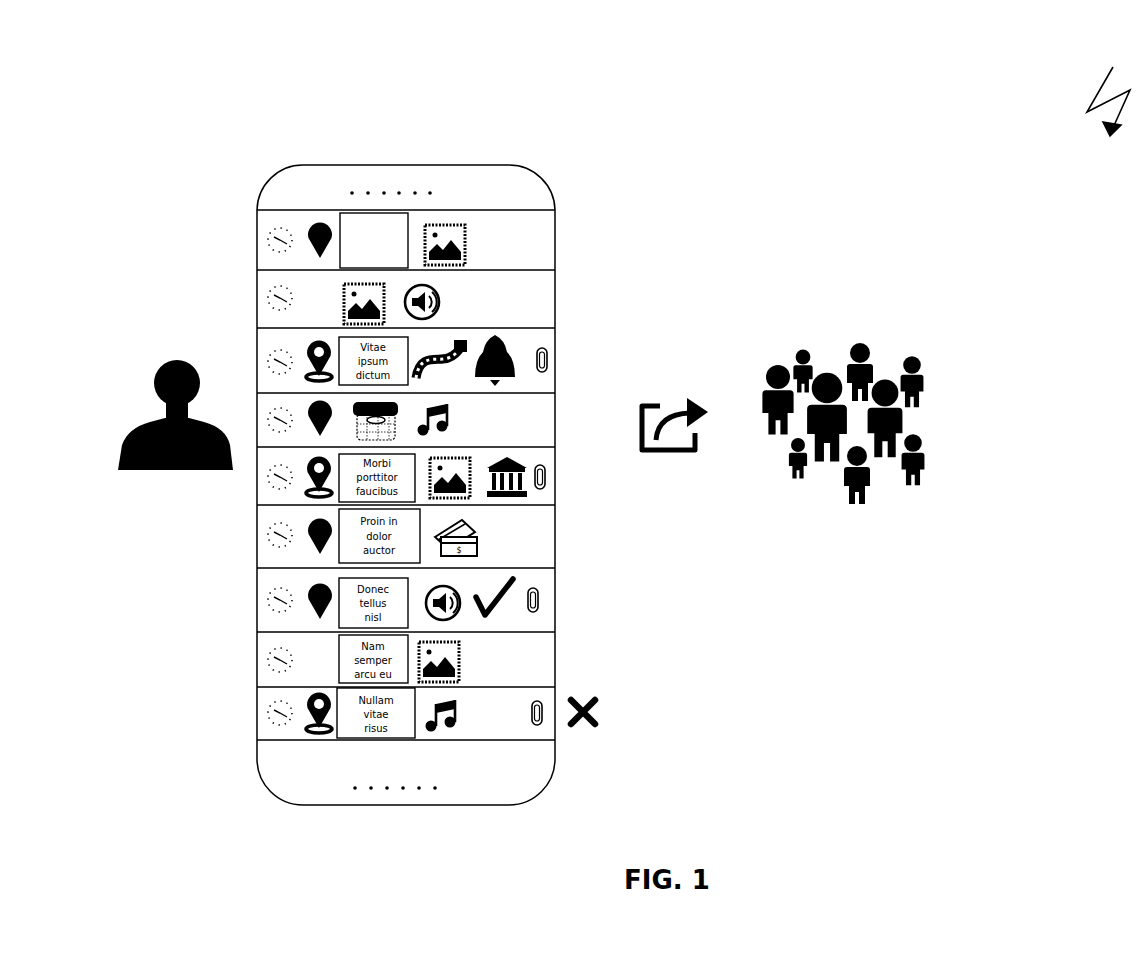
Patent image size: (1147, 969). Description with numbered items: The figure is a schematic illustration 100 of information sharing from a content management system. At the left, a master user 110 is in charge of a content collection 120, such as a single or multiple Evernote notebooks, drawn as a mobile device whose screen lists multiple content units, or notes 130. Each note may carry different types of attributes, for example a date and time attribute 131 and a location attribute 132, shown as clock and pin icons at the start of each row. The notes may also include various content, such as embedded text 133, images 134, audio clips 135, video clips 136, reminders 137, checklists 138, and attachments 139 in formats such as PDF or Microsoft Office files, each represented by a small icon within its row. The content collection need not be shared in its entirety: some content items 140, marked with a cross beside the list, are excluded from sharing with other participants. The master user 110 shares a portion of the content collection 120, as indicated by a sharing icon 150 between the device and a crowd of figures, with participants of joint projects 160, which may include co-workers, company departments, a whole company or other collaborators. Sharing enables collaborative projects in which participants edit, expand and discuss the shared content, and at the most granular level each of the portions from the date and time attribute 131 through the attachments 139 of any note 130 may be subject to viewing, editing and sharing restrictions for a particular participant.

The schematic illustration 100 is at (1108, 89).
The master user 110 is at (163, 358).
The content collection 120 is at (288, 163).
The notes 130 is at (250, 243).
The date and time attribute 131 is at (265, 652).
The location attribute 132 is at (302, 596).
The embedded text 133 is at (386, 213).
The images 134 is at (454, 222).
The audio clips 135 is at (447, 297).
The video clips 136 is at (455, 342).
The reminders 137 is at (512, 345).
The checklists 138 is at (497, 580).
The attachments 139 is at (545, 600).
The content items excluded from sharing 140 is at (563, 695).
The sharing icon 150 is at (657, 400).
The participants of joint projects 160 is at (878, 343).